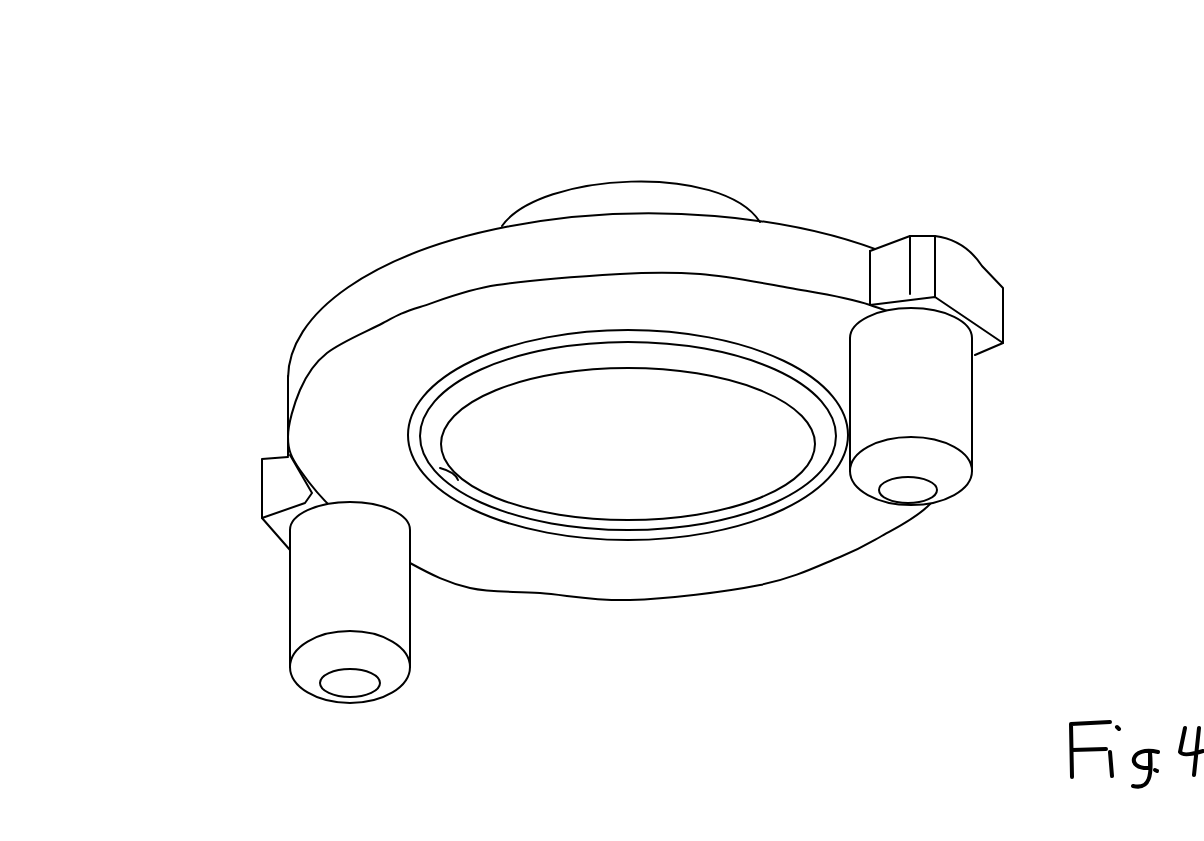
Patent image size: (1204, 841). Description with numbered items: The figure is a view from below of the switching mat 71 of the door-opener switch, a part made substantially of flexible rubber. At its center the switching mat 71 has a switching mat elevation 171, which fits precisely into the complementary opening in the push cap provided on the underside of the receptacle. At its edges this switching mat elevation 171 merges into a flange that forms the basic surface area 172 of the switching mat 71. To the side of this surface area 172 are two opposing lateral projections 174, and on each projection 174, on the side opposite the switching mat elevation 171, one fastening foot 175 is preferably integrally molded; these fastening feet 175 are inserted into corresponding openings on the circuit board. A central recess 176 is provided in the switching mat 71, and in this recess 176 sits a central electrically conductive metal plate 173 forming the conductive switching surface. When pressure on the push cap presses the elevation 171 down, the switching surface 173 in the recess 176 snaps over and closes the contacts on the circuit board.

The switching mat 71 is at (651, 381).
The switching mat elevation 171 is at (642, 197).
The basic surface area 172 is at (412, 330).
The electrically conductive metal plate 173 is at (720, 398).
The lateral projections 174 is at (262, 507).
The fastening foot 175 is at (303, 640).
The central recess 176 is at (443, 470).